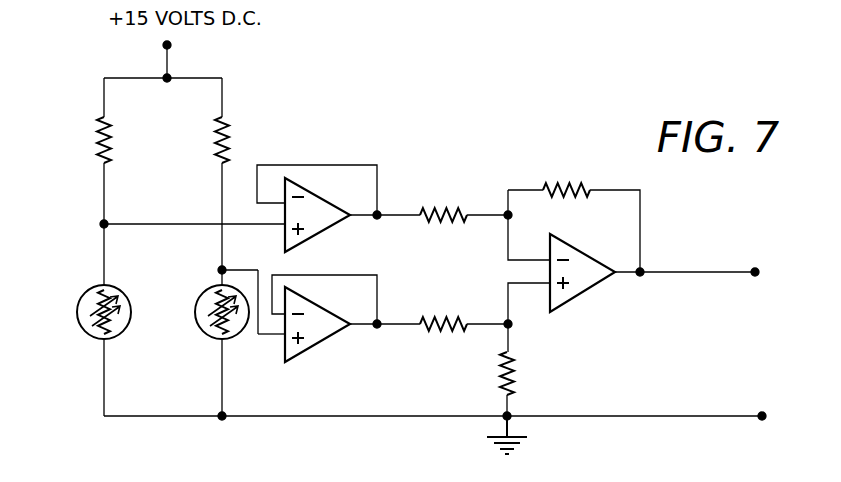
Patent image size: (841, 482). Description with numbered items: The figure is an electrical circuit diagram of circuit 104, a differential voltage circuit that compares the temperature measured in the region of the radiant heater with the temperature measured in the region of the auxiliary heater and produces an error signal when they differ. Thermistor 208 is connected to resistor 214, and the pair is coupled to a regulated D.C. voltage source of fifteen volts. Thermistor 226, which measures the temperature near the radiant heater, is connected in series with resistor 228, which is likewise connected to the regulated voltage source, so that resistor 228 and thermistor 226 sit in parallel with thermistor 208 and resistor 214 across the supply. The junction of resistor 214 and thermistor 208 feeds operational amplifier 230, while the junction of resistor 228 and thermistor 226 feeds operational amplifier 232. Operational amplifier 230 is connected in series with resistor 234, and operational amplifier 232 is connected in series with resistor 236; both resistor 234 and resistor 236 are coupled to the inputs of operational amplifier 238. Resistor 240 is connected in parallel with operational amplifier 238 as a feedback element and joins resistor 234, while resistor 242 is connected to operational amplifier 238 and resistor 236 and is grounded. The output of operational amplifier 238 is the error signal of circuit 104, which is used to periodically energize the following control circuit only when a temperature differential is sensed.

The circuit 104 is at (466, 164).
The thermistor 208 is at (82, 316).
The resistor 214 is at (97, 148).
The thermistor 226 is at (200, 312).
The resistor 228 is at (215, 148).
The operational amplifier 230 is at (342, 210).
The operational amplifier 232 is at (342, 320).
The resistor 234 is at (449, 211).
The resistor 236 is at (446, 320).
The operational amplifier 238 is at (592, 258).
The resistor 240 is at (567, 183).
The resistor 242 is at (514, 360).